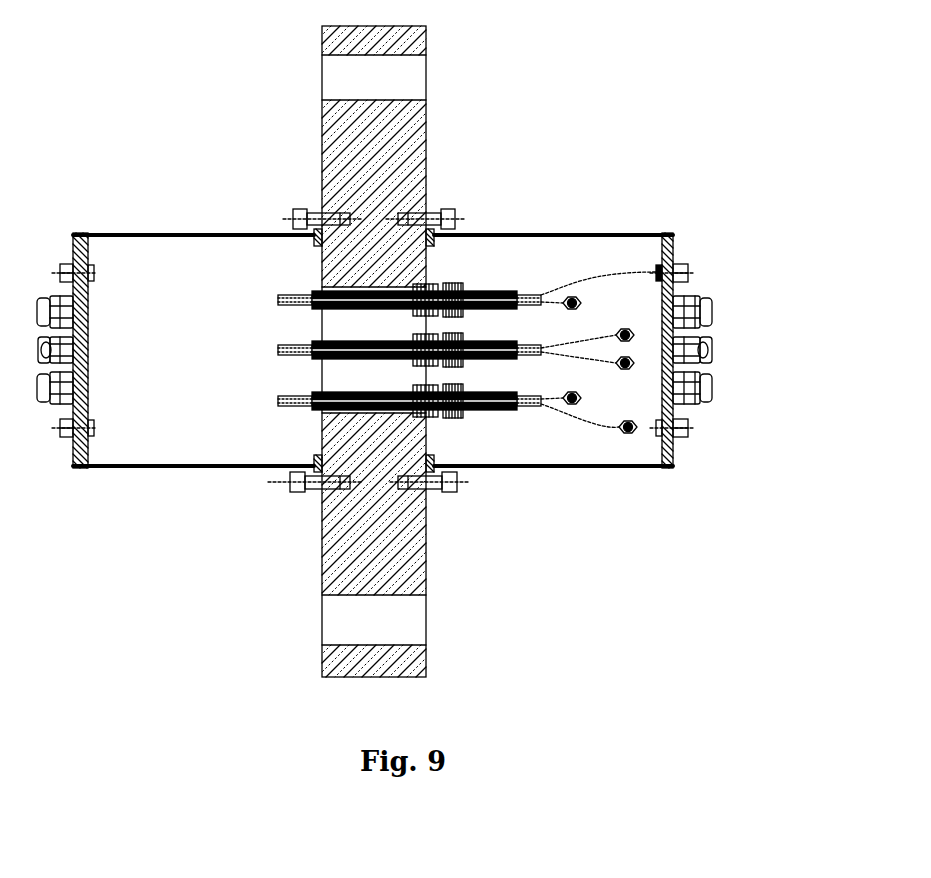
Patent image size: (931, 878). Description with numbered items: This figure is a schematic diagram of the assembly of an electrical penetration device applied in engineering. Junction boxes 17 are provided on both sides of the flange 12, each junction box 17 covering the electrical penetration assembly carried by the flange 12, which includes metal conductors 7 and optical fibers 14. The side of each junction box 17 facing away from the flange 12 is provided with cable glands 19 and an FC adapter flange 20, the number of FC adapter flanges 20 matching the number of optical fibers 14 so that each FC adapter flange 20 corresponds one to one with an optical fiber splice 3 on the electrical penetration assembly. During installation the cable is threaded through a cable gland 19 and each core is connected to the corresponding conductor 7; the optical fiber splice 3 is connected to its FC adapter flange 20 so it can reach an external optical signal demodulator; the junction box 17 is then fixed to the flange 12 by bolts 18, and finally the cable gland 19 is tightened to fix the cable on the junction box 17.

The optical fiber splice 3 is at (632, 432).
The metal conductor 7 is at (278, 402).
The flange 12 is at (420, 135).
The optical fiber 14 is at (566, 413).
The junction box 17 is at (197, 233).
The bolt 18 is at (457, 493).
The cable gland 19 is at (713, 392).
The FC adapter flange 20 is at (688, 265).